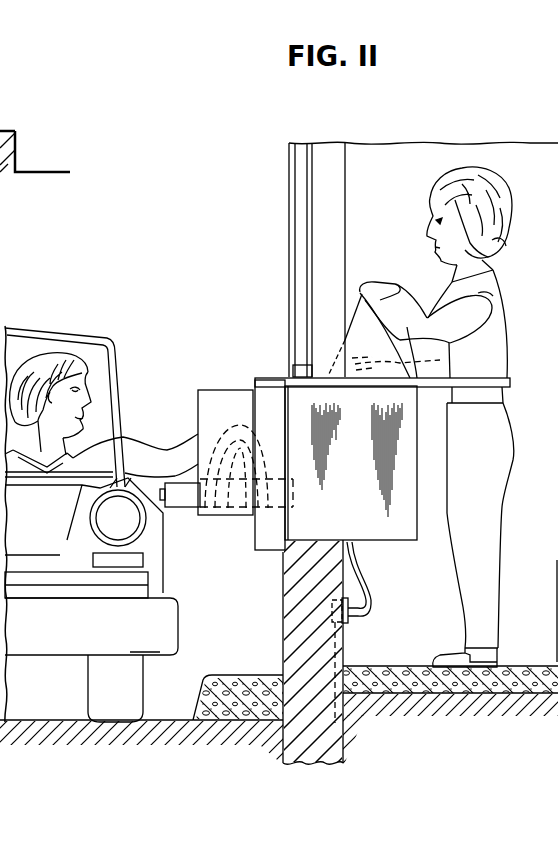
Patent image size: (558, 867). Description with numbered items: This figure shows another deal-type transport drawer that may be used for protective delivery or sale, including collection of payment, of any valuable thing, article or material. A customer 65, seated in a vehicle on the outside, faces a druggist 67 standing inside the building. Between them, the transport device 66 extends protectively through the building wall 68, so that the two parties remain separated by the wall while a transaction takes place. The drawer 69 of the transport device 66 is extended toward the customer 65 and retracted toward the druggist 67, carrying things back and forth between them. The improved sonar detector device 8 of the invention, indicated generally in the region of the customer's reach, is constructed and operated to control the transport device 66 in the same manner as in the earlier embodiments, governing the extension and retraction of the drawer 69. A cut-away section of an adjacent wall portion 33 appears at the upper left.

The building wall 33 is at (0, 118).
The customer 65 is at (62, 364).
The sonar detector device 8 is at (152, 492).
The transport device 66 is at (367, 491).
The druggist 67 is at (480, 355).
The building wall 68 is at (304, 629).
The drawer 69 is at (181, 498).